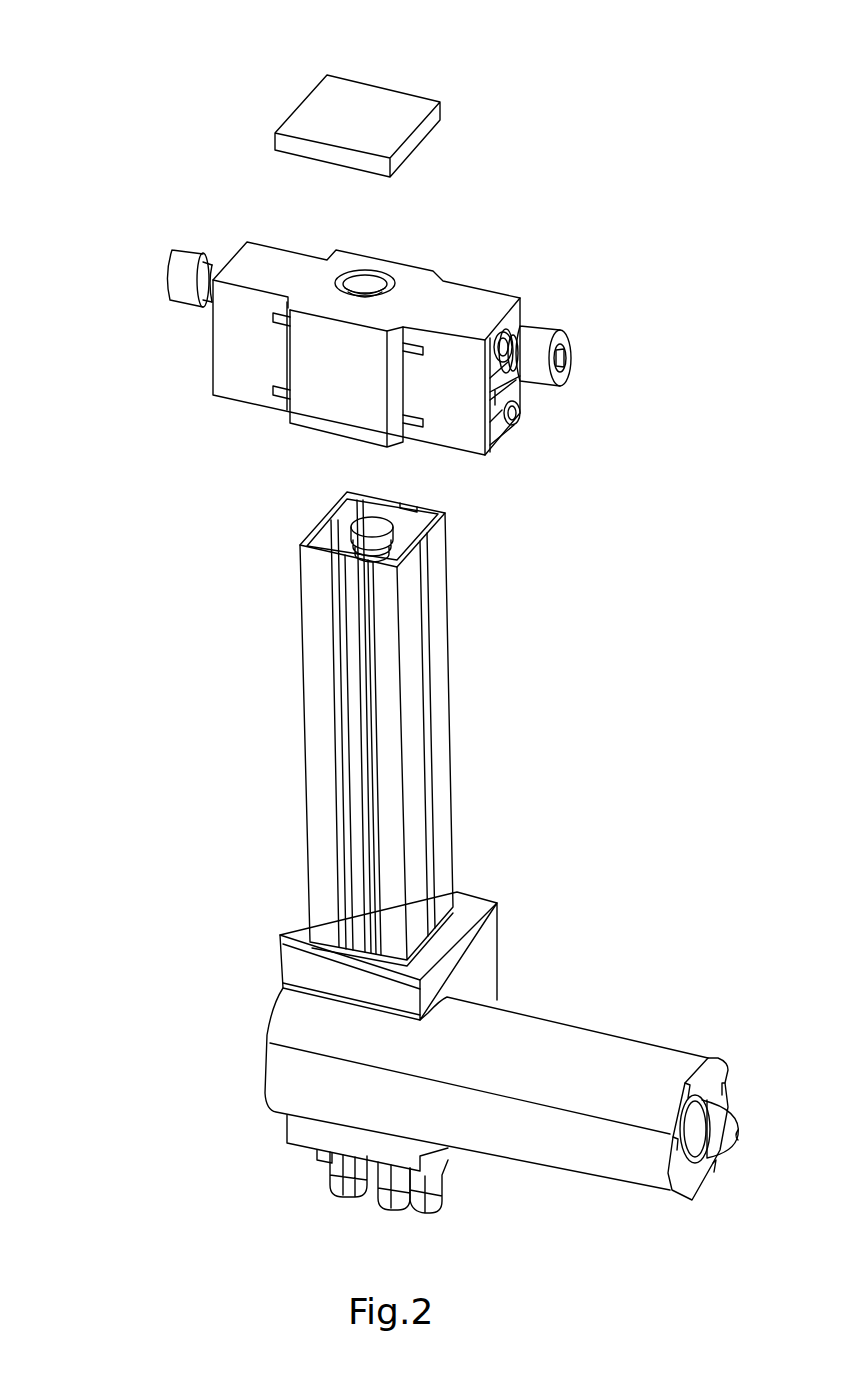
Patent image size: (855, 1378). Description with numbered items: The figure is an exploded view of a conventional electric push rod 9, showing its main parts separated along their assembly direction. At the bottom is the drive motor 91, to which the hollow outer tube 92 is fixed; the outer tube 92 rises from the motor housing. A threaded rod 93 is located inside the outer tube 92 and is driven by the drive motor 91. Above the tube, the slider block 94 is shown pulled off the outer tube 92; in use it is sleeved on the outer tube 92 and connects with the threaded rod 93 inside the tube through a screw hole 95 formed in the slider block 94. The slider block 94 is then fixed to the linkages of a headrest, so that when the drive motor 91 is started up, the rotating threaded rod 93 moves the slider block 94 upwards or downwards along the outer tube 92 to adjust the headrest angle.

The electric push rod 9 is at (88, 33).
The drive motor 91 is at (595, 1060).
The outer tube 92 is at (328, 807).
The threaded rod 93 is at (370, 530).
The slider block 94 is at (240, 357).
The screw hole 95 is at (384, 277).